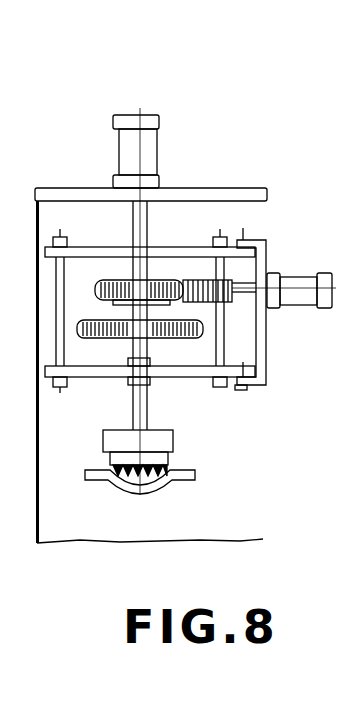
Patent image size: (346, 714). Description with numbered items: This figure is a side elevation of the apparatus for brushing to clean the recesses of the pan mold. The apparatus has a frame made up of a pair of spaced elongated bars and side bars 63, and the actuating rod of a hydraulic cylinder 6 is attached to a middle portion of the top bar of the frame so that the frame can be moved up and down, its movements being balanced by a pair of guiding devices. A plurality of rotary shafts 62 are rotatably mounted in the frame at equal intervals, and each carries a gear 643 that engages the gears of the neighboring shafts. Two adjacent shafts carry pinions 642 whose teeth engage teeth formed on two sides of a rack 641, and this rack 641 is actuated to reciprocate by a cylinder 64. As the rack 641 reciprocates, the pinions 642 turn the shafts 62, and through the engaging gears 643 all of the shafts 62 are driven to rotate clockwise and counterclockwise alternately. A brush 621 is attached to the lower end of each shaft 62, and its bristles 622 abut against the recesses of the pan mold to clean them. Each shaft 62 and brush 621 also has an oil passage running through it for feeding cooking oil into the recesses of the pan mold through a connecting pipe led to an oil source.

The hydraulic cylinder 6 is at (162, 120).
The rotary shaft 62 is at (133, 407).
The side bar 63 is at (61, 356).
The cylinder 64 is at (295, 300).
The rack 641 is at (190, 287).
The pinion 642 is at (120, 283).
The gear 643 is at (188, 338).
The brush 621 is at (112, 440).
The bristles 622 is at (122, 482).